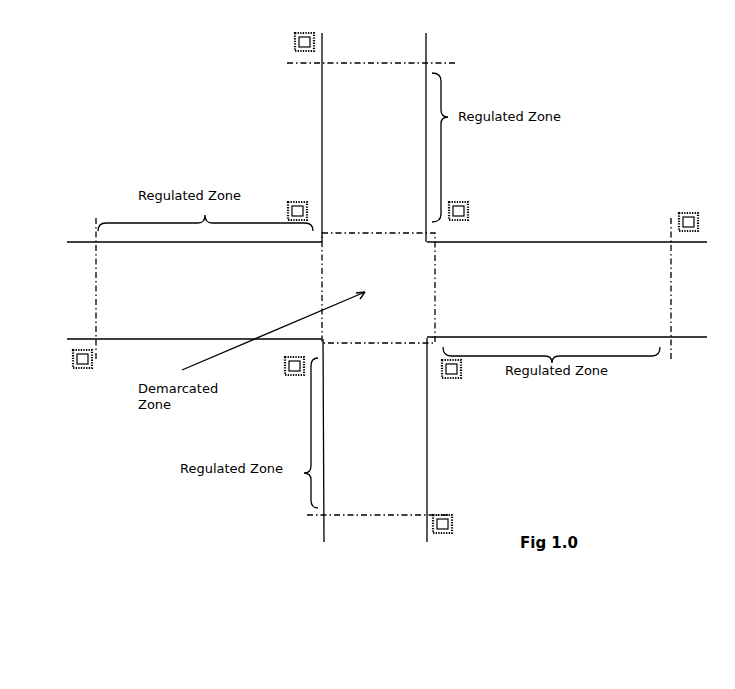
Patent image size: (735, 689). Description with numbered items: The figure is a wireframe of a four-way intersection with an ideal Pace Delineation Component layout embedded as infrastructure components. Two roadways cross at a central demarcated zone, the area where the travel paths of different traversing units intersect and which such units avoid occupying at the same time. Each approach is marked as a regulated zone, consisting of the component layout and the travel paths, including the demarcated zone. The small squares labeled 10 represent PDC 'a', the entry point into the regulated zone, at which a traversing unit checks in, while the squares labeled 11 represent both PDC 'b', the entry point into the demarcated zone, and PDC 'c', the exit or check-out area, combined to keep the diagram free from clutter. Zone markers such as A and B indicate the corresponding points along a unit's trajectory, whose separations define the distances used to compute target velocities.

The PDC infrastructure component 10 is at (698, 220).
The PDC infrastructure component 11 is at (468, 210).
The zone A traffic signal state label A is at (380, 289).
The zone B/C traffic signal state label B is at (372, 287).